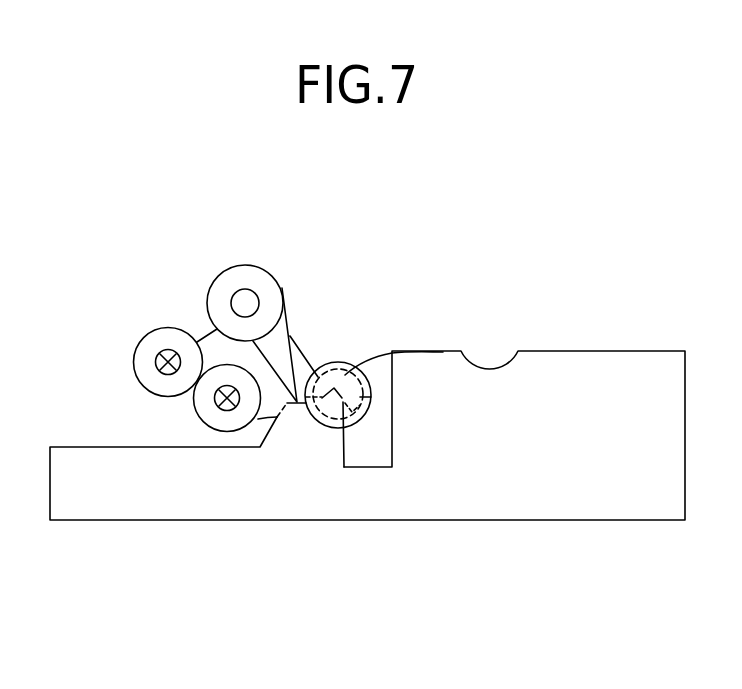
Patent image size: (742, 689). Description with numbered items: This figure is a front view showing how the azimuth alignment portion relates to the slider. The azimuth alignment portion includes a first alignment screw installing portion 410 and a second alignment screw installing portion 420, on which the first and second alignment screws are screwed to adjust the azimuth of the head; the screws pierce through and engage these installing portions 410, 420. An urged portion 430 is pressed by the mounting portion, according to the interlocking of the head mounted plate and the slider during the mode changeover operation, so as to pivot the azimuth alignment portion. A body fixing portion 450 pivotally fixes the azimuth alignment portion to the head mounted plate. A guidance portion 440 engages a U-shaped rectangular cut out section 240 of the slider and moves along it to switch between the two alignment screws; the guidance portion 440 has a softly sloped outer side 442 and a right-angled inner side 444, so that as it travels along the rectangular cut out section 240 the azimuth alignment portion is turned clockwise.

The rectangular cut out section 240 is at (344, 467).
The first alignment screw installing portion 410 is at (140, 344).
The second alignment screw installing portion 420 is at (197, 418).
The urged portion 430 is at (290, 334).
The guidance portion 440 is at (371, 397).
The softly sloped outer side 442 is at (443, 352).
The right-angled inner side 444 is at (342, 398).
The body fixing portion 450 is at (270, 268).